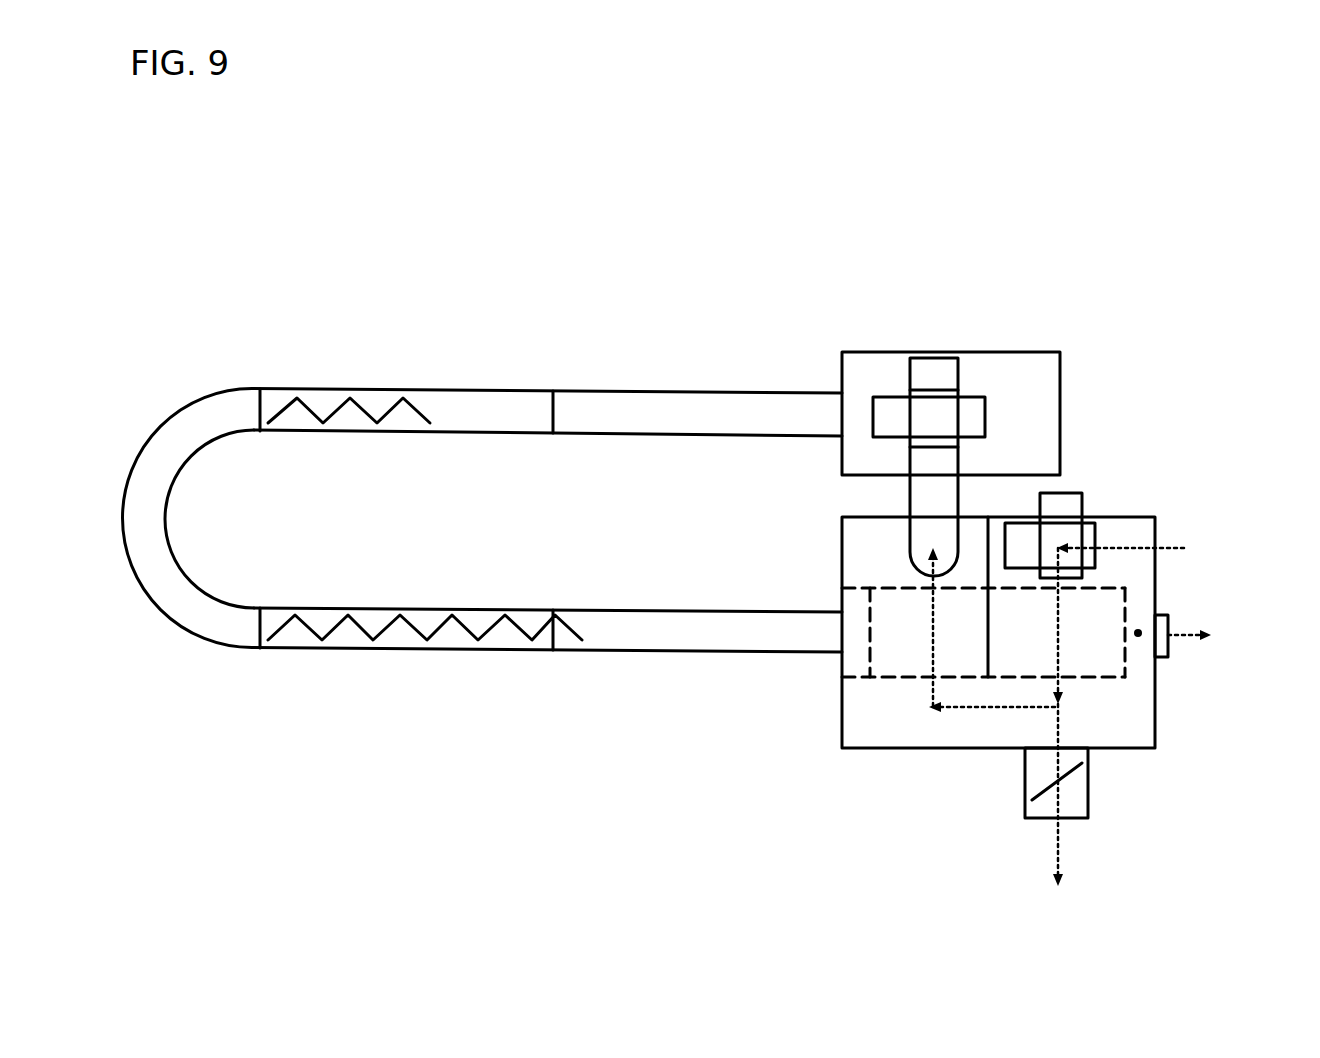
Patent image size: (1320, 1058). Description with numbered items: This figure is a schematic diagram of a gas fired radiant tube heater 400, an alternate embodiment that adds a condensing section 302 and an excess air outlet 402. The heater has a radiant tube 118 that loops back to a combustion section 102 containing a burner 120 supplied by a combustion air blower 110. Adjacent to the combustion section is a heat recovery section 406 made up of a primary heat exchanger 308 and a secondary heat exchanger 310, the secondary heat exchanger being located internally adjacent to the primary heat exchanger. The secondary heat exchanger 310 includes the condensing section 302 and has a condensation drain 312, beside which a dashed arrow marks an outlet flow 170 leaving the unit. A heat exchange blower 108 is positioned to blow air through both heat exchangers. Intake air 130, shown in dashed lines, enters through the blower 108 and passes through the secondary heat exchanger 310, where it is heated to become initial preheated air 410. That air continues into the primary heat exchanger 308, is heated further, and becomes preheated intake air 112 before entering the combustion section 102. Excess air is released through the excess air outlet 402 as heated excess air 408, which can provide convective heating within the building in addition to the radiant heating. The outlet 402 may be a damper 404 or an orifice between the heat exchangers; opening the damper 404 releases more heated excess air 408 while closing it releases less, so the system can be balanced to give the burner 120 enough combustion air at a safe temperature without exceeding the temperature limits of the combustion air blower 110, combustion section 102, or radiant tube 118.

The combustion section 102 is at (990, 365).
The heat exchange blower 108 is at (1062, 505).
The combustion air blower 110 is at (930, 463).
The preheated intake air 112 is at (930, 623).
The radiant tube 118 is at (632, 411).
The burner 120 is at (970, 413).
The intake air 130 is at (1168, 549).
The output signal 170 is at (1190, 632).
The condensing section 302 is at (1135, 740).
The primary heat exchanger 308 is at (858, 547).
The secondary heat exchanger 310 is at (1118, 532).
The condensation drain 312 is at (1140, 635).
The gas fired radiant tube heater 400 is at (455, 128).
The excess air outlet 402 is at (1078, 803).
The damper 404 is at (1036, 797).
The heat recovery section 406 is at (705, 753).
The heated excess air 408 is at (1053, 838).
The initial preheated air 410 is at (1058, 650).